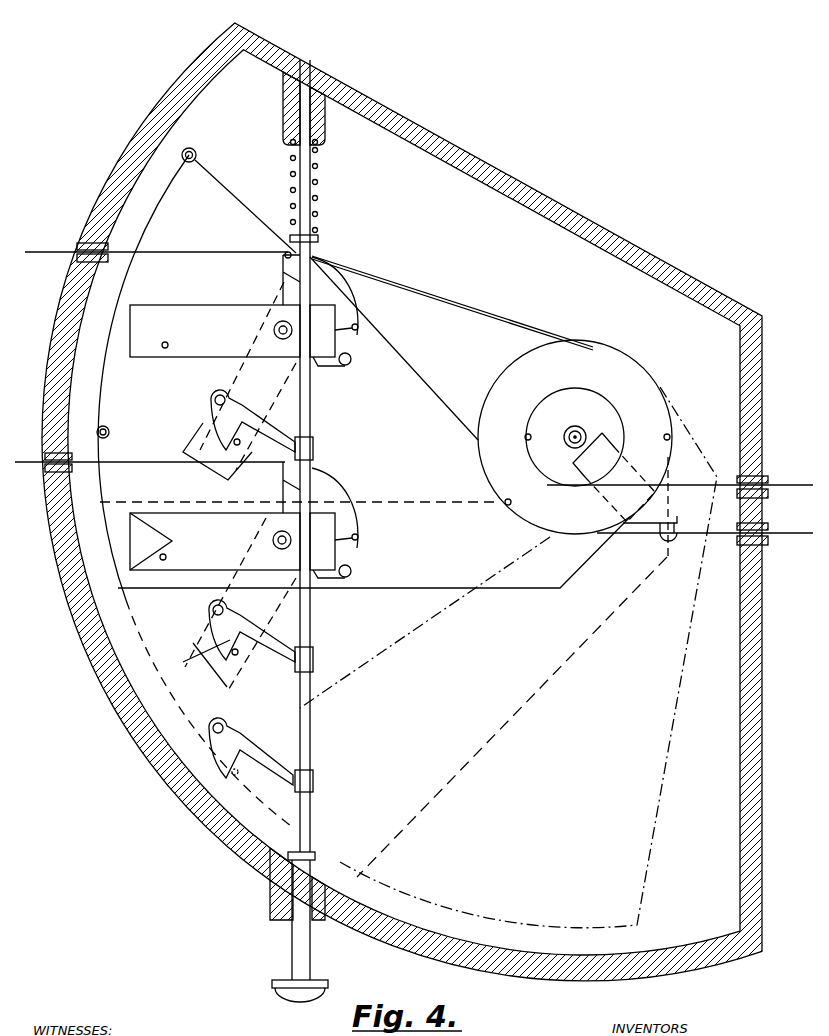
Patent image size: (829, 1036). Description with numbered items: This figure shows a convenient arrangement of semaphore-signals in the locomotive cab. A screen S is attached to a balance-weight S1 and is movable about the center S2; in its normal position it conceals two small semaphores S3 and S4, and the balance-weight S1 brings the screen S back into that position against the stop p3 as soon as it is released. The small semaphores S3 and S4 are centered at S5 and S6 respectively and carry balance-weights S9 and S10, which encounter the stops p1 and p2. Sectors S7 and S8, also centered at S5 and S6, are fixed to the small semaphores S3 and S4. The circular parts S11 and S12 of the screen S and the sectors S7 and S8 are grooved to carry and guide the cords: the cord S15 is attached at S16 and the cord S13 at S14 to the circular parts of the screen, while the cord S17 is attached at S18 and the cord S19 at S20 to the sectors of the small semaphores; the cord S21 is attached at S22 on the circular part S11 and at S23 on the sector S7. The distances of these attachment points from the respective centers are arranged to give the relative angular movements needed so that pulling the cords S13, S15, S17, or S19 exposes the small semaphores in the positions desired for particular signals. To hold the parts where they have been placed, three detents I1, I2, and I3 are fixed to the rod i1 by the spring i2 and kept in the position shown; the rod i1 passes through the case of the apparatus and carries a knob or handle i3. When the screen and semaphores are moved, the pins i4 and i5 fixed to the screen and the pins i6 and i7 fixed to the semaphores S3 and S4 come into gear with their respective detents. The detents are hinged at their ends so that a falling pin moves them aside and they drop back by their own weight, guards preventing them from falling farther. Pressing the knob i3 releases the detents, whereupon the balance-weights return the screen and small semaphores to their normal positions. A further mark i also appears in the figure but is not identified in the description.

The screen S is at (365, 487).
The flexible band i is at (407, 541).
The rod i1 is at (307, 687).
The spring i2 is at (293, 190).
The knob or handle i3 is at (292, 995).
The pin i4 is at (198, 156).
The pin i5 is at (105, 426).
The pin i6 is at (167, 343).
The pin i7 is at (161, 556).
The detent I1 is at (218, 414).
The detent I2 is at (225, 625).
The detent I3 is at (232, 740).
The balance-weight S1 is at (620, 496).
The center S2 is at (567, 437).
The small semaphore S3 is at (215, 331).
The small semaphore S4 is at (215, 541).
The center S5 is at (283, 330).
The center S6 is at (288, 535).
The sector S7 is at (342, 298).
The sector S8 is at (343, 502).
The balance-weight S9 is at (320, 323).
The balance-weight S10 is at (328, 555).
The circular part S11 is at (582, 363).
The circular part S12 is at (593, 408).
The cord S13 is at (680, 484).
The point of attachment S14 is at (525, 438).
The cord S15 is at (705, 531).
The point of attachment S16 is at (508, 500).
The cord S17 is at (156, 248).
The point of attachment S18 is at (358, 341).
The cord S19 is at (148, 459).
The point of attachment S20 is at (358, 536).
The cord S21 is at (451, 348).
The point of attachment S22 is at (670, 437).
The point of attachment S23 is at (298, 253).
The stop p1 is at (351, 362).
The stop p2 is at (351, 572).
The stop p3 is at (668, 549).